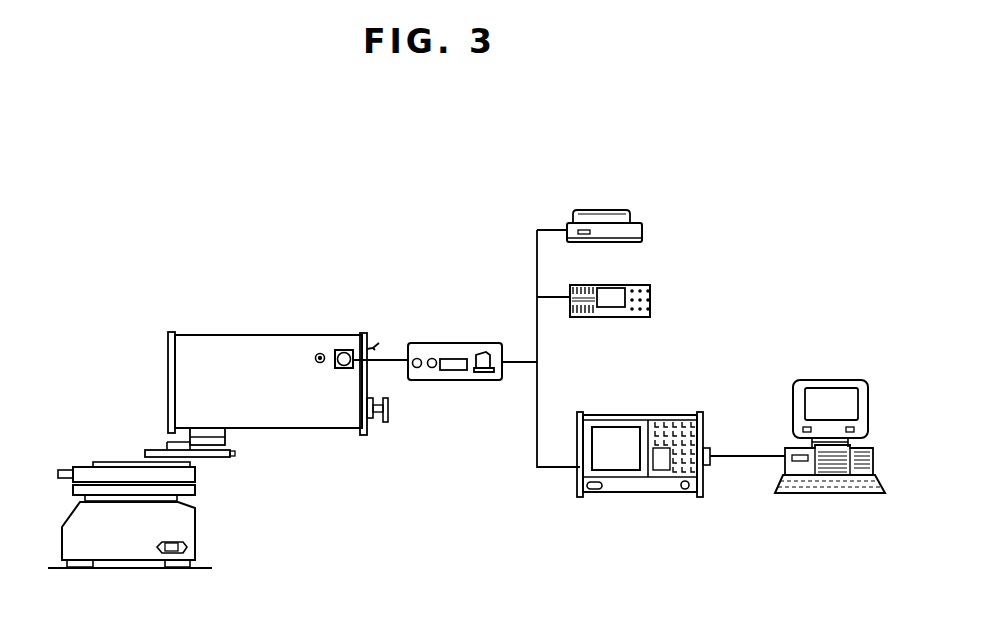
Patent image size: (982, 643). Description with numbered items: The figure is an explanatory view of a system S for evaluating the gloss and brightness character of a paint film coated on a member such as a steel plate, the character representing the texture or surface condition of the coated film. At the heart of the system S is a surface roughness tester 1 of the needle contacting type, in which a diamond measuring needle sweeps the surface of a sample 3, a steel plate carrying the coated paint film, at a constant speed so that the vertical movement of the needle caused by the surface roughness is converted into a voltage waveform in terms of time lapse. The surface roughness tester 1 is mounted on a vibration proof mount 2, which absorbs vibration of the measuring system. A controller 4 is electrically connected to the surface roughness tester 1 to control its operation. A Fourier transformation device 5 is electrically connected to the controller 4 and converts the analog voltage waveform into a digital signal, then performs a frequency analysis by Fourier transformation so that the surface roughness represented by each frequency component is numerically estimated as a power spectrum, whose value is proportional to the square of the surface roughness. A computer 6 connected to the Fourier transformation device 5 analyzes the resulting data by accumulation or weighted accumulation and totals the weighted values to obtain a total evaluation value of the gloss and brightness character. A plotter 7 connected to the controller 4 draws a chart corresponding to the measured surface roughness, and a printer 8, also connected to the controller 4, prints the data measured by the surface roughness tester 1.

The gloss and brightness character evaluation system S is at (364, 268).
The surface roughness tester 1 is at (282, 336).
The vibration proof mount 2 is at (196, 536).
The sample 3 is at (118, 462).
The controller 4 is at (453, 343).
The Fourier transformation device 5 is at (632, 492).
The computer 6 is at (830, 493).
The plotter 7 is at (627, 209).
The printer 8 is at (640, 280).